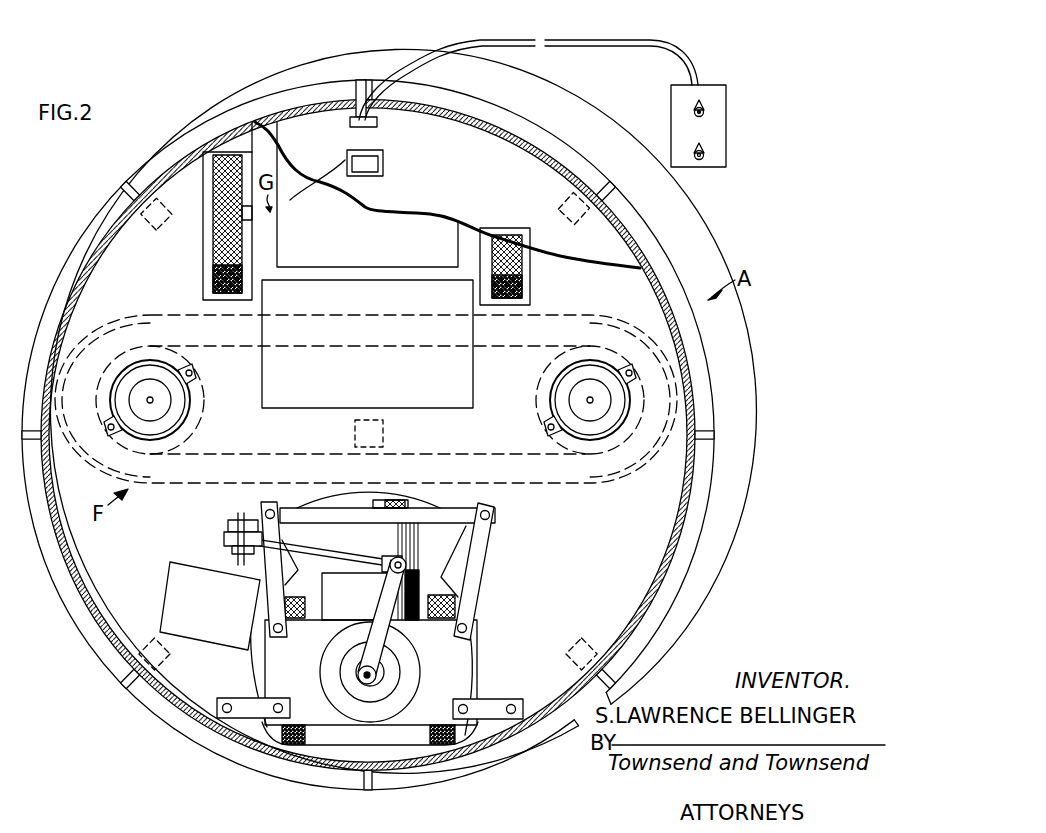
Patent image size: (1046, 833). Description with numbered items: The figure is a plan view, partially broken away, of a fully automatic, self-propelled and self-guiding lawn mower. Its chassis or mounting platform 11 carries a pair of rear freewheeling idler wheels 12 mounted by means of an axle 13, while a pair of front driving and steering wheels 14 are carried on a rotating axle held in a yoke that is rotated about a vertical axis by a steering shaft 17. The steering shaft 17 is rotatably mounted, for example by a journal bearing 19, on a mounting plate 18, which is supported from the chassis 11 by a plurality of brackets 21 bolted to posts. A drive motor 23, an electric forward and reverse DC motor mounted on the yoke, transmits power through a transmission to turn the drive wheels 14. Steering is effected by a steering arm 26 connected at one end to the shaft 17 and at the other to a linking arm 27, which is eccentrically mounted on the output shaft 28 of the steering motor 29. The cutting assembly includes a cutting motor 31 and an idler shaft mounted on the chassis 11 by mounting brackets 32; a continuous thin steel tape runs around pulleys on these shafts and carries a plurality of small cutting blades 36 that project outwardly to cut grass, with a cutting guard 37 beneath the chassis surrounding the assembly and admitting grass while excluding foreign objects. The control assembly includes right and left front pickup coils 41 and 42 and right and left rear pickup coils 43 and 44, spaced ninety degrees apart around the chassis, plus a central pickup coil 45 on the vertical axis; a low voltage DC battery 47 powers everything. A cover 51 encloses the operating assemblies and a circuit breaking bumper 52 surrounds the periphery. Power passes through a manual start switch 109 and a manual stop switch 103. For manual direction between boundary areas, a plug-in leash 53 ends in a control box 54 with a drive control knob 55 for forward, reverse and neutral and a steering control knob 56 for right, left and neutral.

The chassis 11 is at (577, 587).
The rear idler wheels 12 is at (218, 243).
The axle 13 is at (252, 213).
The front driving and steering wheels 14 is at (430, 737).
The steering shaft 17 is at (386, 682).
The mounting plate 18 is at (456, 694).
The journal bearing 19 is at (332, 667).
The brackets 21 is at (478, 560).
The drive motor 23 is at (400, 530).
The steering arm 26 is at (385, 638).
The linking arm 27 is at (346, 562).
The output shaft 28 is at (232, 556).
The steering motor 29 is at (178, 587).
The cutting motor 31 is at (176, 403).
The mounting brackets 32 is at (192, 377).
The cutting blades 36 is at (95, 393).
The cutting guard 37 is at (616, 478).
The right front pickup coil 41 is at (152, 642).
The left front pickup coil 42 is at (594, 638).
The right rear pickup coil 43 is at (156, 226).
The left rear pickup coil 44 is at (566, 200).
The central pickup coil 45 is at (382, 436).
The battery 47 is at (459, 373).
The cover 51 is at (470, 174).
The circuit breaking bumper 52 is at (670, 622).
The plug-in leash 53 is at (552, 38).
The control box 54 is at (727, 122).
The drive control knob 55 is at (705, 156).
The steering control knob 56 is at (704, 110).
The manual stop switch 103 is at (383, 155).
The manual start switch 109 is at (348, 155).